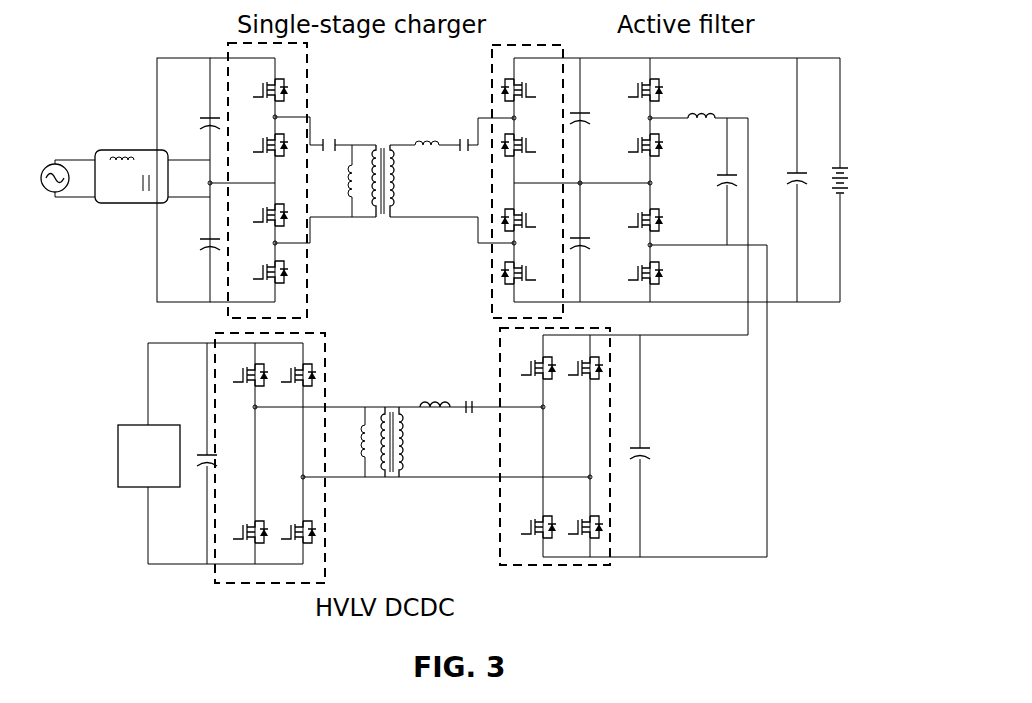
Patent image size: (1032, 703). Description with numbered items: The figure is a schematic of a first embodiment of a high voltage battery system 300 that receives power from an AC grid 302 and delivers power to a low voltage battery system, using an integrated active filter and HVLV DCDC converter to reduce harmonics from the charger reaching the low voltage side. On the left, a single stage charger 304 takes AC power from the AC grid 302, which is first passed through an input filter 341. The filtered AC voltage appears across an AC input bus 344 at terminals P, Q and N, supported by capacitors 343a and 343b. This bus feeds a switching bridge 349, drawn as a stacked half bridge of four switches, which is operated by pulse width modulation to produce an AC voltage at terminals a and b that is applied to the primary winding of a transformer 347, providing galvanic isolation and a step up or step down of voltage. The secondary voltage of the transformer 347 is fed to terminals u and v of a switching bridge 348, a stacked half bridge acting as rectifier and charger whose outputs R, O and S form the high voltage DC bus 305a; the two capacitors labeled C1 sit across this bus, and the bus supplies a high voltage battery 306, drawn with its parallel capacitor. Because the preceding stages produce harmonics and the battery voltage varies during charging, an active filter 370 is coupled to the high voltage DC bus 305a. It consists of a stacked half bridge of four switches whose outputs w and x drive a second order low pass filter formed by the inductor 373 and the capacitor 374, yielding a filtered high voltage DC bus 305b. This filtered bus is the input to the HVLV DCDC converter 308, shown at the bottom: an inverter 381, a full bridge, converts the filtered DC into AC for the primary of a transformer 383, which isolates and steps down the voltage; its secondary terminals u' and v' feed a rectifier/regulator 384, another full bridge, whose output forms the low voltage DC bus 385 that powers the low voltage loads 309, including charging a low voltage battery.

The high voltage battery system 300 is at (792, 398).
The AC grid 302 is at (44, 162).
The single stage charger 304 is at (80, 312).
The high voltage DC bus 305a is at (827, 58).
The filtered high voltage DC bus 305b is at (680, 336).
The high voltage battery 306 is at (845, 165).
The HVLV DCDC converter 308 is at (118, 583).
The low voltage loads 309 is at (130, 425).
The input filter 341 is at (113, 150).
The capacitor 343a is at (200, 113).
The capacitor 343b is at (200, 250).
The AC input bus 344 is at (186, 55).
The transformer 347 is at (382, 140).
The switching bridge 348 is at (522, 42).
The switching bridge 349 is at (310, 80).
The active filter 370 is at (748, 42).
The inductor 373 is at (692, 110).
The capacitor 374 is at (732, 187).
The inverter 381 is at (578, 565).
The transformer 383 is at (390, 400).
The rectifier/regulator 384 is at (220, 583).
The low voltage DC bus 385 is at (176, 342).
The DC link capacitors C1 is at (574, 121).